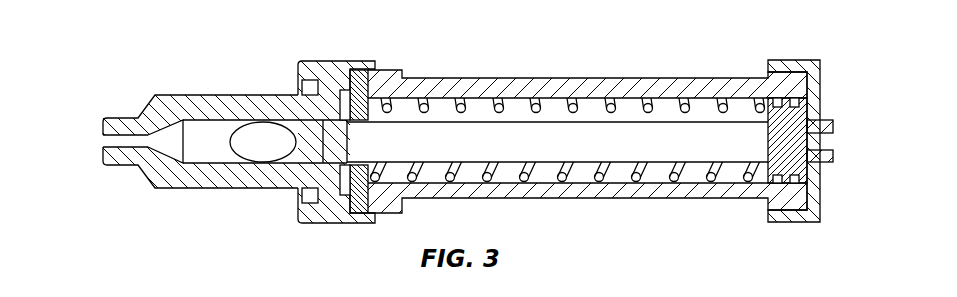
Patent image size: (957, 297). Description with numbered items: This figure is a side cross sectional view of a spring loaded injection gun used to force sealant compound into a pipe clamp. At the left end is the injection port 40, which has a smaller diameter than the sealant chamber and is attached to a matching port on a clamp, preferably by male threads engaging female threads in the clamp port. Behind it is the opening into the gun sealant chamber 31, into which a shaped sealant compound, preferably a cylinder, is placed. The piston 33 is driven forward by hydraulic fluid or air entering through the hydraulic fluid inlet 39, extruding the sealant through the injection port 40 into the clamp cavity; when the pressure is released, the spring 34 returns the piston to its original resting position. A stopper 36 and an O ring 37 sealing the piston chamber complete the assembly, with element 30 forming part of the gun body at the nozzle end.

The nozzle body 30 is at (172, 141).
The sealant chamber 31 is at (263, 142).
The piston 33 is at (315, 62).
The spring 34 is at (647, 107).
The stopper 36 is at (770, 95).
The O ring 37 is at (775, 98).
The hydraulic fluid inlet 39 is at (833, 142).
The injection port 40 is at (110, 142).